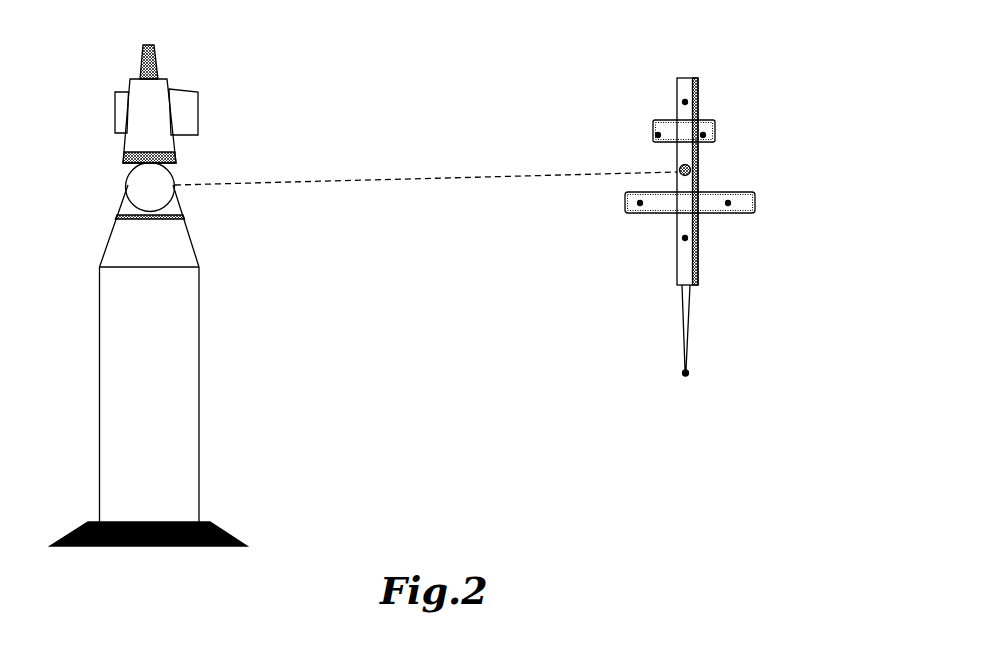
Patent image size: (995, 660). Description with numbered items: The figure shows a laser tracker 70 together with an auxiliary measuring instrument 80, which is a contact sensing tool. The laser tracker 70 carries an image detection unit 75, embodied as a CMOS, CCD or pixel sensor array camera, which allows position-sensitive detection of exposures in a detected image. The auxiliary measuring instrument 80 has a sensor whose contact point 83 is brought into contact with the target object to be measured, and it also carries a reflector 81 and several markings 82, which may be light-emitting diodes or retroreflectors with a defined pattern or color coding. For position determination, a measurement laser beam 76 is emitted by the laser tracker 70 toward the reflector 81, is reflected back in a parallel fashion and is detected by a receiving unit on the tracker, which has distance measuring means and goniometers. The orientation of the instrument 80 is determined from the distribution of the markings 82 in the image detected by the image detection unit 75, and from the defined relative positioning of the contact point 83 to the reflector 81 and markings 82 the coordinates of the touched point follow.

The laser tracker 70 is at (133, 187).
The image detection unit 75 is at (120, 108).
The measurement laser beam 76 is at (452, 178).
The auxiliary measuring instrument 80 is at (656, 70).
The reflector 81 is at (691, 169).
The markings 82 is at (685, 102).
The contact point 83 is at (688, 370).